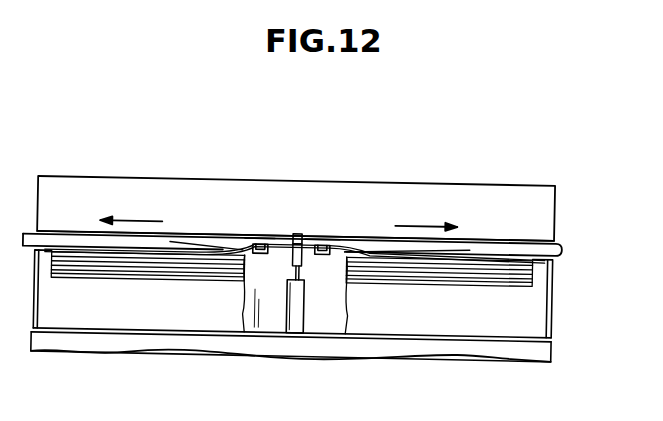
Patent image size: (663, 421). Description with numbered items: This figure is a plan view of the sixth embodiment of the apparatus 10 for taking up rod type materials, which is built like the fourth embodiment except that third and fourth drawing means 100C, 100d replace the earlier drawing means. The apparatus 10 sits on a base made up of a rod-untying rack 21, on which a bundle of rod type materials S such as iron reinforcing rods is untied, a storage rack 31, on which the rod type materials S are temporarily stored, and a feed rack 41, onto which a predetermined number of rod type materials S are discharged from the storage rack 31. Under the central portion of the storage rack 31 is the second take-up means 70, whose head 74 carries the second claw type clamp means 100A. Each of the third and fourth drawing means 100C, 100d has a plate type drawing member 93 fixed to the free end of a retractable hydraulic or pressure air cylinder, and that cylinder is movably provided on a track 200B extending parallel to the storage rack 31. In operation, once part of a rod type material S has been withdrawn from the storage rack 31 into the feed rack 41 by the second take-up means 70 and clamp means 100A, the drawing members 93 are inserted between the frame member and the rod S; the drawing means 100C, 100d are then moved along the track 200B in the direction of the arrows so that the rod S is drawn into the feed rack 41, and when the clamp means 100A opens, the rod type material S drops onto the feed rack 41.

The apparatus for taking up rod type materials 10 is at (135, 170).
The rod type material S is at (223, 246).
The fourth drawing means 100d is at (253, 220).
The plate type drawing member 93 is at (262, 246).
The second claw type clamp means 100A is at (299, 235).
The third drawing means 100C is at (348, 220).
The track 200B is at (470, 239).
The feed rack 41 is at (540, 227).
The head 74 is at (292, 262).
The second take-up means 70 is at (314, 322).
The storage rack 31 is at (444, 330).
The rod-untying rack 21 is at (513, 351).